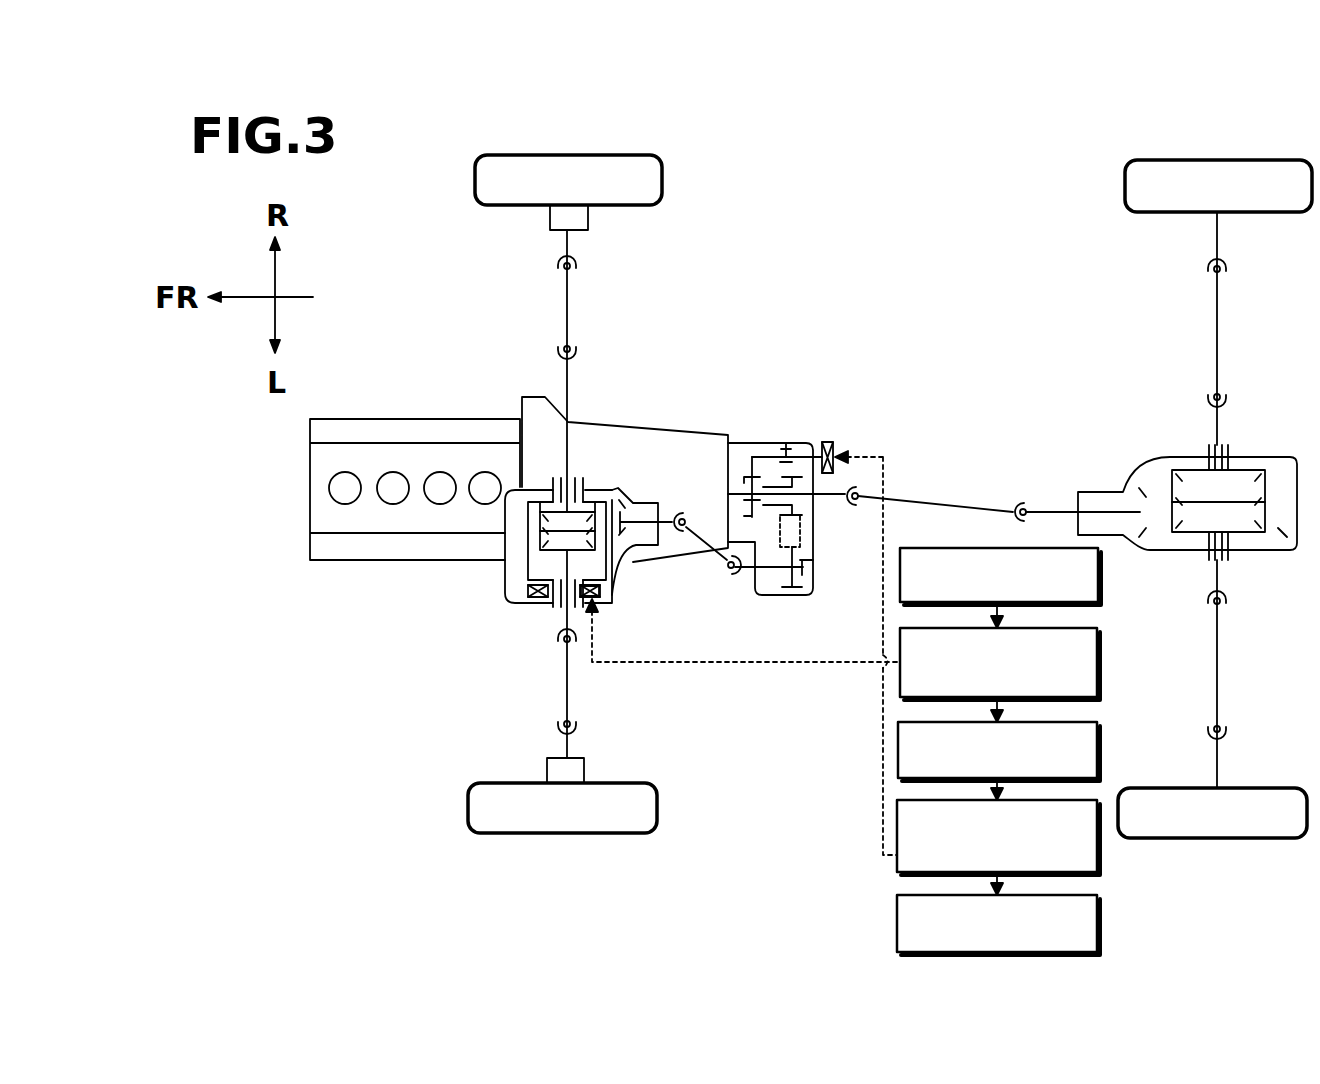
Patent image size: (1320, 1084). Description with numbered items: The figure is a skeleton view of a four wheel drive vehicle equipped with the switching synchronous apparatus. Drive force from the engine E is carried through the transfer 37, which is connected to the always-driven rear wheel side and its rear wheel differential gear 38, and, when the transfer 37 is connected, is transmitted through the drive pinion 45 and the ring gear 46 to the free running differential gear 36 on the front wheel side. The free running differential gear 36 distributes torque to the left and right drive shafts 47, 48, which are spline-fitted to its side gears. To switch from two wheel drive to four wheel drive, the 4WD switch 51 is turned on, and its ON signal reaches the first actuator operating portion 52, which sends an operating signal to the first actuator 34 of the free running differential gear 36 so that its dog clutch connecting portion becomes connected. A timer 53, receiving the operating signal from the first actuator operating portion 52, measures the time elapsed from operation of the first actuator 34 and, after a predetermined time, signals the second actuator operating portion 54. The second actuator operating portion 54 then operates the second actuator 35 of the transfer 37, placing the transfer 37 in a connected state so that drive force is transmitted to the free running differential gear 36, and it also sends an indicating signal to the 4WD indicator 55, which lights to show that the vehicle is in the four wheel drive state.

The engine E is at (439, 420).
The first actuator 34 is at (603, 597).
The second actuator 35 is at (836, 446).
The free running differential gear 36 is at (523, 577).
The transfer 37 is at (808, 438).
The rear wheel differential gear 38 is at (1131, 461).
The drive pinion 45 is at (626, 520).
The ring gear 46 is at (617, 500).
The left drive shaft 47 is at (566, 618).
The right drive shaft 48 is at (566, 378).
The 4WD switch 51 is at (1099, 573).
The first actuator operating portion 52 is at (1098, 661).
The timer 53 is at (1098, 742).
The second actuator operating portion 54 is at (1098, 842).
The 4WD indicator 55 is at (1098, 923).